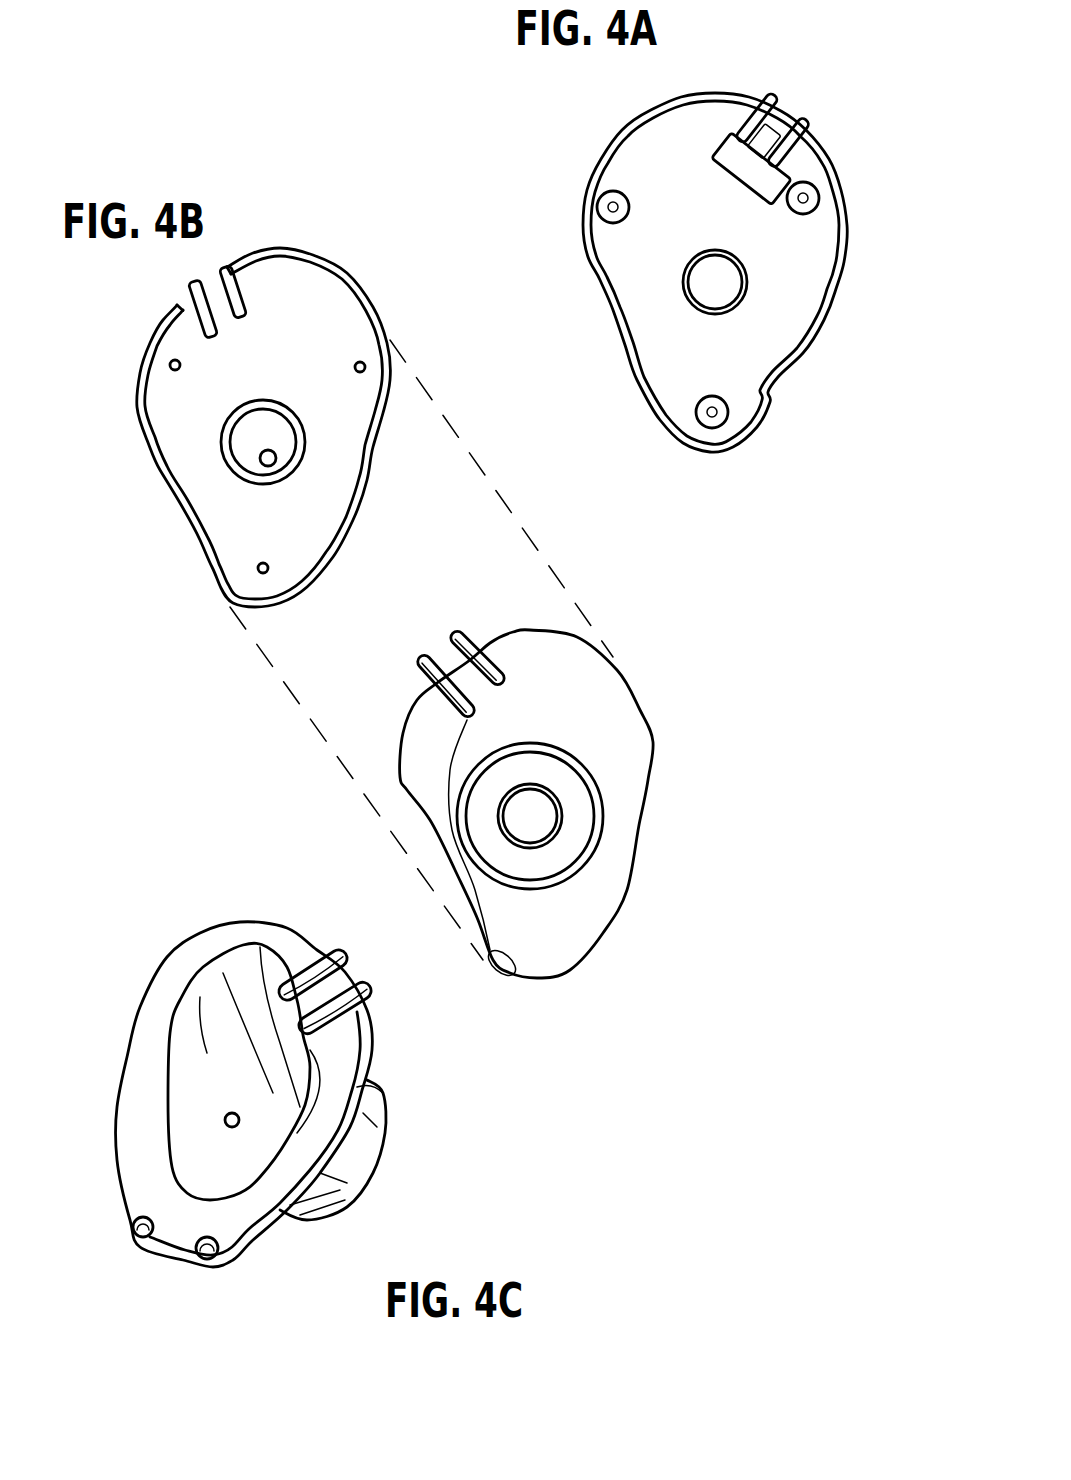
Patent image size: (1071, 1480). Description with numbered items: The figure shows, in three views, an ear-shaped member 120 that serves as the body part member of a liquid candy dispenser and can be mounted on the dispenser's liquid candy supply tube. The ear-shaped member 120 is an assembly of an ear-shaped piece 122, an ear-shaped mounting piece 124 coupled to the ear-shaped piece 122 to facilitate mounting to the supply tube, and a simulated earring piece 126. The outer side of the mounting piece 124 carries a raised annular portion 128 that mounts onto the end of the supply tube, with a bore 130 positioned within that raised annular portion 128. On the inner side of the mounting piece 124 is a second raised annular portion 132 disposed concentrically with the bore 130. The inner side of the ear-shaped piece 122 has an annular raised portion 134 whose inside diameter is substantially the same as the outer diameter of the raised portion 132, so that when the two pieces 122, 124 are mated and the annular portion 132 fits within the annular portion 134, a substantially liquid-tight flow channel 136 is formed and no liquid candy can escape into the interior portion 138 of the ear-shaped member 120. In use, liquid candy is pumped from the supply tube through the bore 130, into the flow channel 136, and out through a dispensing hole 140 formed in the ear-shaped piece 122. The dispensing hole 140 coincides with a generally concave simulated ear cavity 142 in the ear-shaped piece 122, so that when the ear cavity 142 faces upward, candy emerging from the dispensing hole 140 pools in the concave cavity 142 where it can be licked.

In FIG. 4B, the ear-shaped member 120 is at (130, 396).
In FIG. 4C, the ear-shaped member 120 is at (112, 1040).
In FIG. 4B, the ear-shaped piece 122 is at (277, 248).
In FIG. 4C, the ear-shaped piece 122 is at (165, 950).
In FIG. 4A, the ear-shaped mounting piece 124 is at (647, 103).
In FIG. 4C, the ear-shaped mounting piece 124 is at (651, 720).
In FIG. 4A, the simulated earring piece 126 is at (818, 117).
In FIG. 4C, the simulated earring piece 126 is at (450, 633).
In FIG. 4C, the raised annular portion 128 is at (593, 852).
In FIG. 4A, the bore 130 is at (713, 300).
In FIG. 4C, the bore 130 is at (535, 814).
In FIG. 4A, the raised annular portion 132 is at (749, 278).
In FIG. 4B, the annular raised portion 134 is at (289, 410).
In FIG. 4B, the flow channel 136 is at (243, 437).
In FIG. 4B, the interior portion 138 is at (205, 467).
In FIG. 4B, the dispensing hole 140 is at (257, 466).
In FIG. 4C, the dispensing hole 140 is at (224, 1122).
In FIG. 4C, the simulated ear cavity 142 is at (190, 1073).